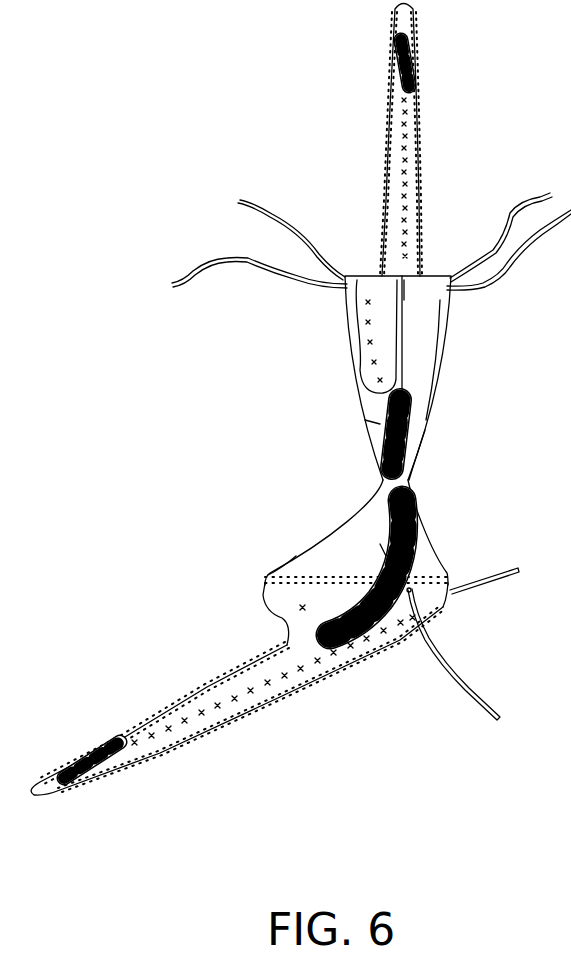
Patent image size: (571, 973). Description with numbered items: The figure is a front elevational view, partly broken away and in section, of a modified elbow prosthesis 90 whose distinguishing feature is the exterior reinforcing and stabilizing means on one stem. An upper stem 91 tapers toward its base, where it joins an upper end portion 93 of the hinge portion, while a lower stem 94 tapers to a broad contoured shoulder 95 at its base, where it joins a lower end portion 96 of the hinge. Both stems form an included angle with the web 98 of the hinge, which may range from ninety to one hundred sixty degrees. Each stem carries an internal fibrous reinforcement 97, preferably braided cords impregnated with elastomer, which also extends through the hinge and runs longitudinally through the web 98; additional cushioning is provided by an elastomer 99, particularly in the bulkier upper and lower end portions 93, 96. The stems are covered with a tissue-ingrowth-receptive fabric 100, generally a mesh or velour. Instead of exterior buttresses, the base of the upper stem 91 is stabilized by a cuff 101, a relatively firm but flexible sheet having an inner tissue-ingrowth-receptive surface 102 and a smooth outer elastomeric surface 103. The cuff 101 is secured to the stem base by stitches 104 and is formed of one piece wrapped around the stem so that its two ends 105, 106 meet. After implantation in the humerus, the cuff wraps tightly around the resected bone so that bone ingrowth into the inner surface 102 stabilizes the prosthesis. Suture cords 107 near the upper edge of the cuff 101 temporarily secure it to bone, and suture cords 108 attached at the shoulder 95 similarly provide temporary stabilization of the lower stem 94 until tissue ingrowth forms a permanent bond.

The elbow prosthesis 90 is at (334, 378).
The upper stem 91 is at (417, 152).
The upper end portion 93 is at (425, 438).
The lower stem 94 is at (273, 700).
The contoured shoulder 95 is at (265, 598).
The lower end portion 96 is at (270, 573).
The internal fibrous reinforcement 97 is at (415, 62).
The web 98 is at (408, 482).
The elastomer 99 is at (385, 450).
The tissue-ingrowth-receptive fabric 100 is at (392, 140).
The cuff 101 is at (445, 375).
The inner tissue-ingrowth-receptive surface 102 is at (370, 276).
The smooth outer elastomeric surface 103 is at (441, 343).
The stitches 104 is at (365, 420).
The end of cuff 105 is at (416, 256).
The end of cuff 106 is at (408, 292).
The suture cords 107 is at (215, 262).
The suture cords 108 is at (492, 583).